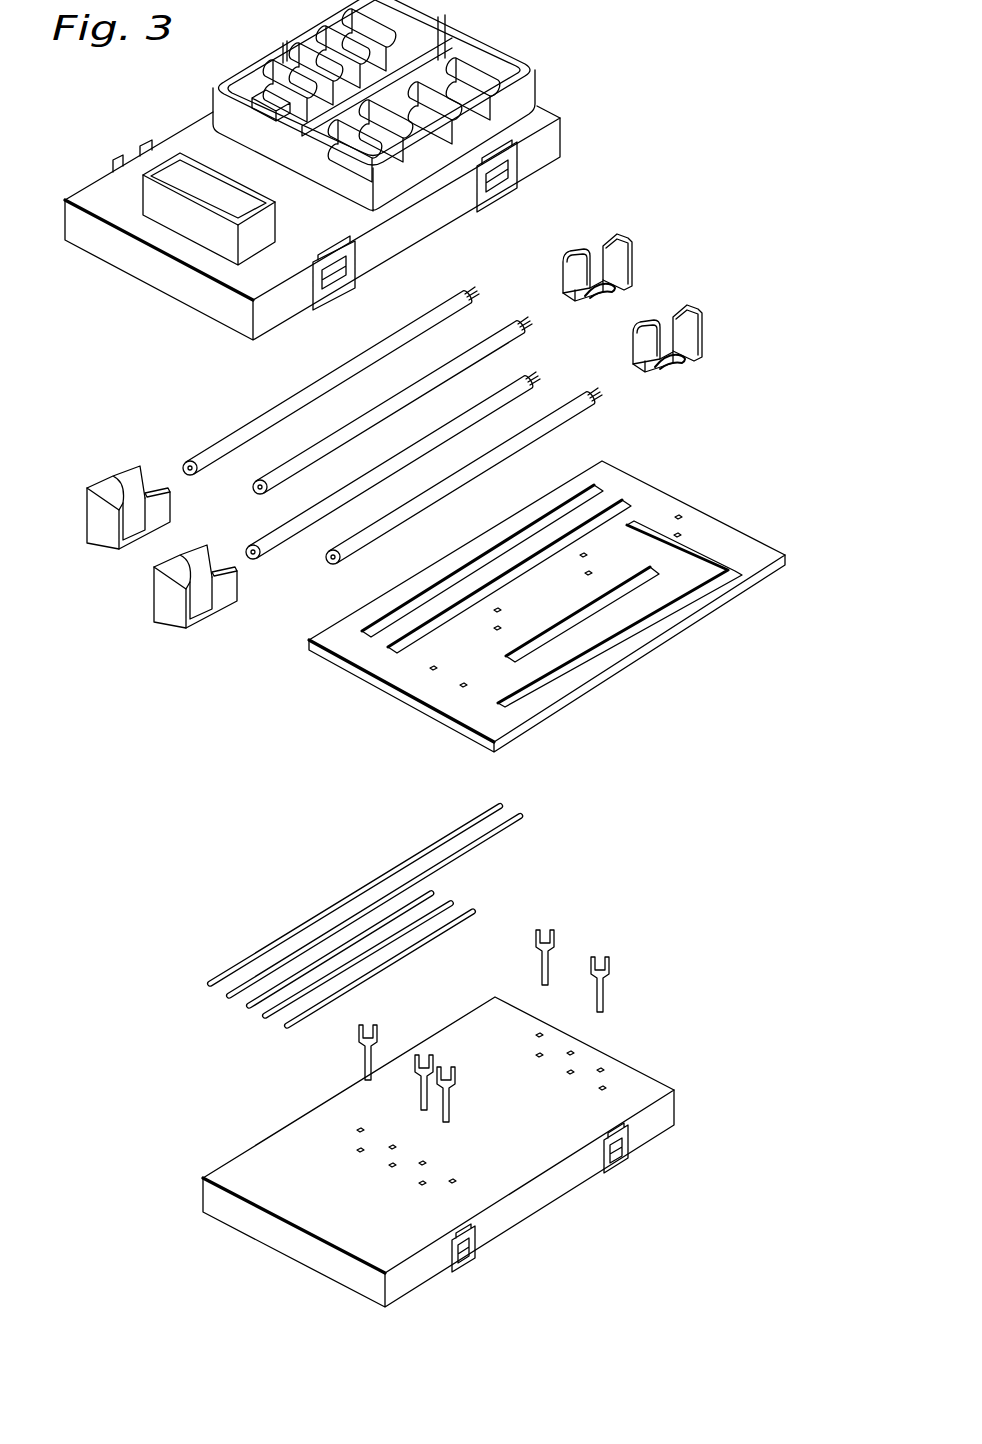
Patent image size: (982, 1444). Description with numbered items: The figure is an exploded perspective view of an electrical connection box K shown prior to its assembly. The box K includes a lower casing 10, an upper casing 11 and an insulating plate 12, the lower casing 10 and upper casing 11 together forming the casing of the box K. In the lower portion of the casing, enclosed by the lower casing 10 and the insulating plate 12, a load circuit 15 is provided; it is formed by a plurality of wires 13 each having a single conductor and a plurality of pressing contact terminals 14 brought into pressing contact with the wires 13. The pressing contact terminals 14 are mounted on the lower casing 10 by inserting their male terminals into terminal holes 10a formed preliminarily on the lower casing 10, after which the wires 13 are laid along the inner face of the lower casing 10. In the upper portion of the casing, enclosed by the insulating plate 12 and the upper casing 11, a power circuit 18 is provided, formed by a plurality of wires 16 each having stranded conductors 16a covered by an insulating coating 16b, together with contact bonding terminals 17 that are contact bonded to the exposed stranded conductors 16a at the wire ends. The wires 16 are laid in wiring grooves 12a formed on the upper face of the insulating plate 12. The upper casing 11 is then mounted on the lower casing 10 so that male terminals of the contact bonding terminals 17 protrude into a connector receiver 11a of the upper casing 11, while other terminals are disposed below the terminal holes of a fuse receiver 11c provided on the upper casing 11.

The lower casing 10 is at (435, 1152).
The terminal holes 10a is at (358, 1148).
The upper casing 11 is at (370, 170).
The connector receiver 11a is at (170, 210).
The fuse receiver 11c is at (520, 53).
The insulating plate 12 is at (548, 603).
The wiring grooves 12a is at (677, 597).
The wires 13 is at (505, 806).
The pressing contact terminals 14 is at (511, 1026).
The load circuit 15 is at (460, 951).
The wires 16 is at (392, 410).
The stranded conductors 16a is at (180, 468).
The insulating coating 16b is at (270, 412).
The contact bonding terminals 17 is at (637, 303).
The power circuit 18 is at (658, 270).
The electrical connection box K is at (738, 379).